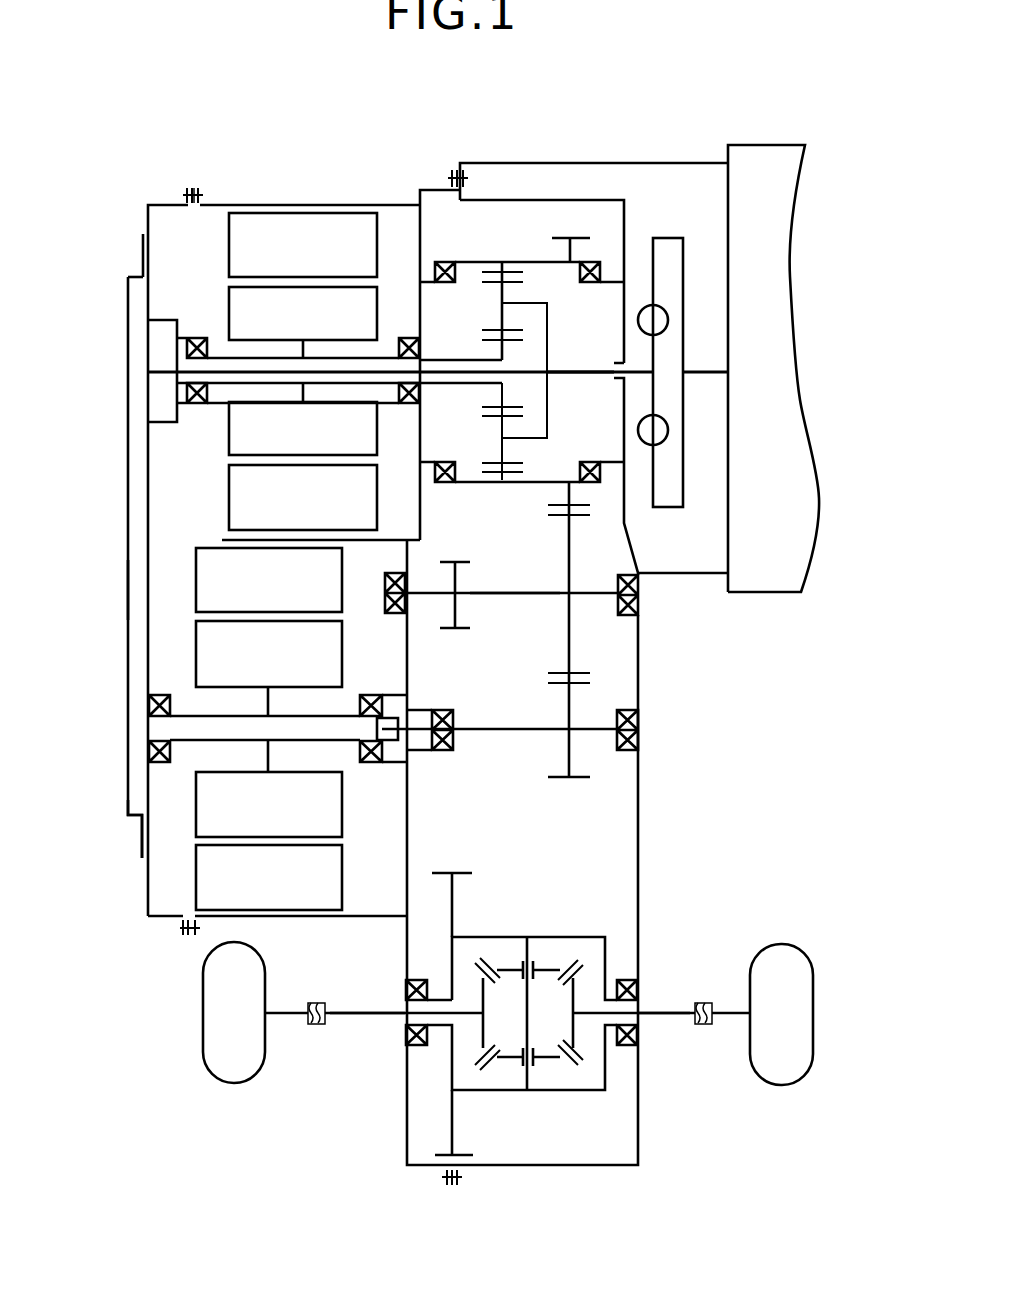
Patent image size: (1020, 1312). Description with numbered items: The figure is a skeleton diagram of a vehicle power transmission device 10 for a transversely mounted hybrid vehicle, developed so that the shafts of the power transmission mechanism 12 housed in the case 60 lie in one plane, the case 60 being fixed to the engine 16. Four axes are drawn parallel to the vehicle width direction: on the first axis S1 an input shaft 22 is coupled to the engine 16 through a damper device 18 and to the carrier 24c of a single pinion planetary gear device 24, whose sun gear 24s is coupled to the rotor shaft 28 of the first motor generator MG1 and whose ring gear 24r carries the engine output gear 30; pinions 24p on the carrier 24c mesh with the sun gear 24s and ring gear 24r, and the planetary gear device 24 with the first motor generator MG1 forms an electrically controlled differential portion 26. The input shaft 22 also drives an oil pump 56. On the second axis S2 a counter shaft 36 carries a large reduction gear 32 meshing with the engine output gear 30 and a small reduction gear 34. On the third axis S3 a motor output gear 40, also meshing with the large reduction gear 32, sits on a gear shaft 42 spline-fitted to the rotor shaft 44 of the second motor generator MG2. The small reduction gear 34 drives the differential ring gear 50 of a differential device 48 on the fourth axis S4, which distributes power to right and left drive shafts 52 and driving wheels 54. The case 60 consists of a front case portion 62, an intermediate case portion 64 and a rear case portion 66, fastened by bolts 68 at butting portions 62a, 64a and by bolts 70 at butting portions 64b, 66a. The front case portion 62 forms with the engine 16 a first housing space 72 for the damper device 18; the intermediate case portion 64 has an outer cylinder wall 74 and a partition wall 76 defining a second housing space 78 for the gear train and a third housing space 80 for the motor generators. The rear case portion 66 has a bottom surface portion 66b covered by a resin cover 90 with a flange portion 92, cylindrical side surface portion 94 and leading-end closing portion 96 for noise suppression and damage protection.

The vehicle power transmission device 10 is at (683, 110).
The power transmission mechanism 12 is at (552, 1057).
The engine 16 is at (760, 158).
The damper device 18 is at (685, 258).
The input shaft 22 is at (563, 376).
The planetary gear device 24 is at (515, 381).
The sun gear 24s is at (482, 409).
The pinions 24p is at (488, 492).
The carrier 24c is at (548, 328).
The ring gear 24r is at (570, 239).
The electrically controlled differential portion 26 is at (502, 218).
The rotor shaft 28 is at (443, 358).
The engine output gear 30 is at (571, 238).
The large reduction gear 32 is at (588, 678).
The small reduction gear 34 is at (462, 630).
The counter shaft 36 is at (514, 592).
The motor output gear 40 is at (566, 778).
The gear shaft 42 is at (508, 731).
The rotor shaft 44 is at (333, 745).
The differential device 48 is at (608, 1117).
The differential ring gear 50 is at (454, 872).
The drive shafts 52 is at (349, 1016).
The driving wheels 54 is at (236, 1065).
The oil pump 56 is at (165, 330).
The case 60 is at (252, 168).
The front case portion 62 is at (617, 162).
The butting portion 62a is at (456, 1183).
The intermediate case portion 64 is at (367, 184).
The butting portion 64a is at (449, 1183).
The butting portion 64b is at (200, 191).
The rear case portion 66 is at (135, 196).
The butting portion 66a is at (188, 192).
The bottom surface portion 66b is at (142, 248).
The fastening bolts 68 is at (466, 177).
The fastening bolts 70 is at (183, 932).
The first housing space 72 is at (677, 557).
The outer cylinder wall 74 is at (338, 205).
The partition wall 76 is at (416, 298).
The second housing space 78 is at (437, 234).
The third housing space 80 is at (172, 254).
The cover 90 is at (106, 458).
The flange portion 92 is at (137, 835).
The cylindrical side surface portion 94 is at (135, 278).
The leading-end closing portion 96 is at (122, 588).
The first motor generator MG1 is at (303, 336).
The second motor generator MG2 is at (168, 868).
The first axis S1 is at (411, 371).
The second axis S2 is at (530, 594).
The third axis S3 is at (249, 728).
The fourth axis S4 is at (458, 1013).